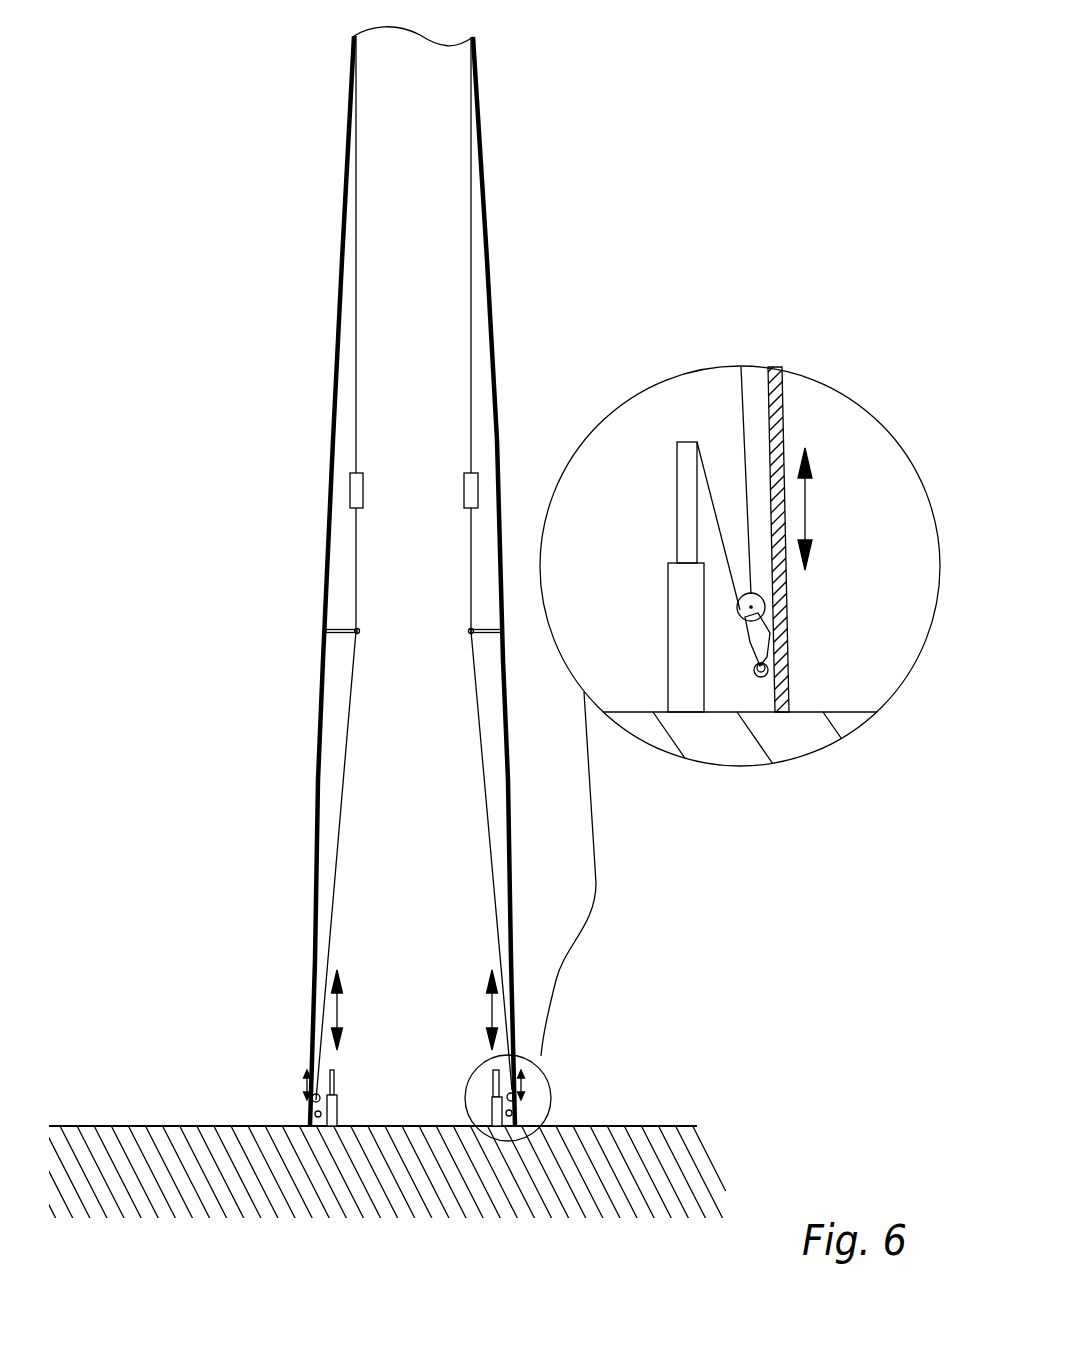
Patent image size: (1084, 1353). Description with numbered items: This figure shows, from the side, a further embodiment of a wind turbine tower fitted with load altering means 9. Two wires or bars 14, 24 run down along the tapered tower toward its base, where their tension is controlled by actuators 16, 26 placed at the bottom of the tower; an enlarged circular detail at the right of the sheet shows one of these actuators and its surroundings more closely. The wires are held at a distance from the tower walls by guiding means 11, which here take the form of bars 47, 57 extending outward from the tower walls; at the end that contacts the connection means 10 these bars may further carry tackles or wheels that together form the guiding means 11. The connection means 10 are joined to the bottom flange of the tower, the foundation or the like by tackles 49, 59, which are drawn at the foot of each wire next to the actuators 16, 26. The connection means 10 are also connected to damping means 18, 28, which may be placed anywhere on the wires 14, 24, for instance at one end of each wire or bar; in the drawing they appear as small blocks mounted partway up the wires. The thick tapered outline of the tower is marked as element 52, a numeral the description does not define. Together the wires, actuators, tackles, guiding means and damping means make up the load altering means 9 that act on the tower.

The load altering means 9 is at (323, 1070).
The connection means 10 is at (356, 390).
The guiding means 11 is at (352, 633).
The wire 14 is at (338, 868).
The actuator 16 is at (337, 1108).
The damping means 18 is at (350, 490).
The wire 24 is at (490, 868).
The actuator 26 is at (493, 1110).
The damping means 28 is at (465, 488).
The bar 47 is at (343, 630).
The tackle 49 is at (508, 1112).
The tower shell 52 is at (345, 207).
The bar 57 is at (486, 630).
The tackle 59 is at (315, 1118).